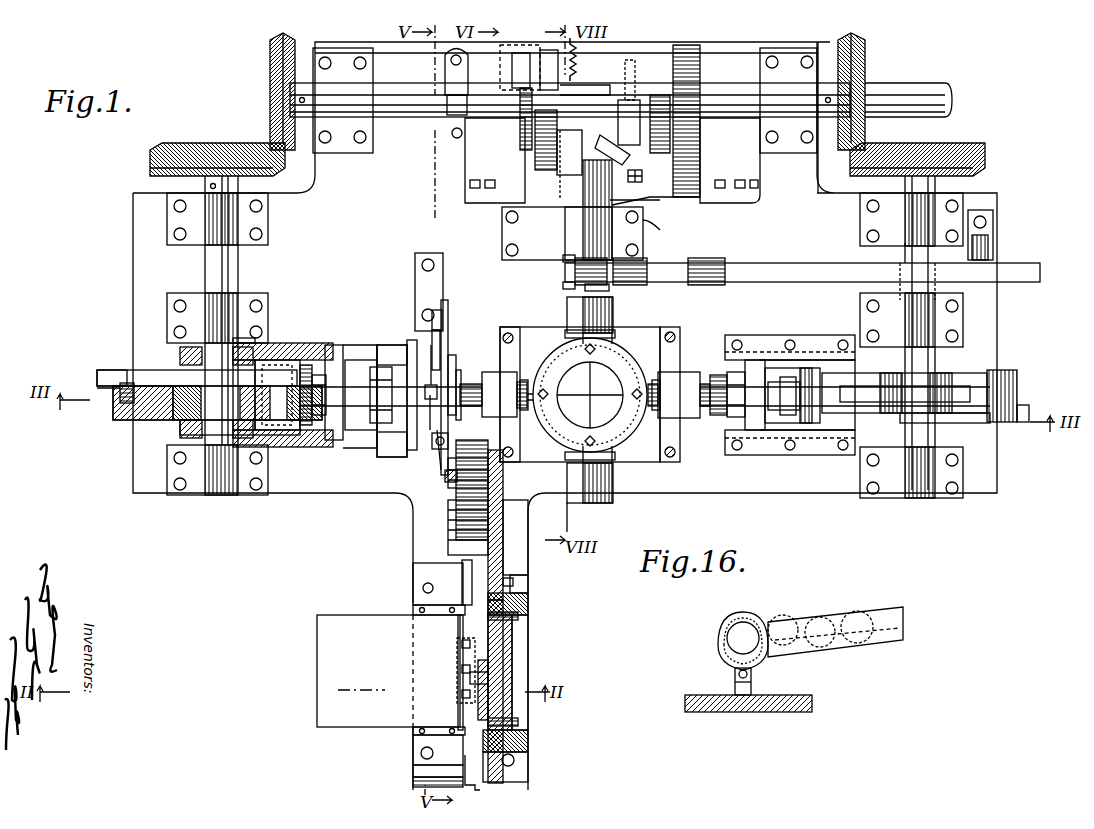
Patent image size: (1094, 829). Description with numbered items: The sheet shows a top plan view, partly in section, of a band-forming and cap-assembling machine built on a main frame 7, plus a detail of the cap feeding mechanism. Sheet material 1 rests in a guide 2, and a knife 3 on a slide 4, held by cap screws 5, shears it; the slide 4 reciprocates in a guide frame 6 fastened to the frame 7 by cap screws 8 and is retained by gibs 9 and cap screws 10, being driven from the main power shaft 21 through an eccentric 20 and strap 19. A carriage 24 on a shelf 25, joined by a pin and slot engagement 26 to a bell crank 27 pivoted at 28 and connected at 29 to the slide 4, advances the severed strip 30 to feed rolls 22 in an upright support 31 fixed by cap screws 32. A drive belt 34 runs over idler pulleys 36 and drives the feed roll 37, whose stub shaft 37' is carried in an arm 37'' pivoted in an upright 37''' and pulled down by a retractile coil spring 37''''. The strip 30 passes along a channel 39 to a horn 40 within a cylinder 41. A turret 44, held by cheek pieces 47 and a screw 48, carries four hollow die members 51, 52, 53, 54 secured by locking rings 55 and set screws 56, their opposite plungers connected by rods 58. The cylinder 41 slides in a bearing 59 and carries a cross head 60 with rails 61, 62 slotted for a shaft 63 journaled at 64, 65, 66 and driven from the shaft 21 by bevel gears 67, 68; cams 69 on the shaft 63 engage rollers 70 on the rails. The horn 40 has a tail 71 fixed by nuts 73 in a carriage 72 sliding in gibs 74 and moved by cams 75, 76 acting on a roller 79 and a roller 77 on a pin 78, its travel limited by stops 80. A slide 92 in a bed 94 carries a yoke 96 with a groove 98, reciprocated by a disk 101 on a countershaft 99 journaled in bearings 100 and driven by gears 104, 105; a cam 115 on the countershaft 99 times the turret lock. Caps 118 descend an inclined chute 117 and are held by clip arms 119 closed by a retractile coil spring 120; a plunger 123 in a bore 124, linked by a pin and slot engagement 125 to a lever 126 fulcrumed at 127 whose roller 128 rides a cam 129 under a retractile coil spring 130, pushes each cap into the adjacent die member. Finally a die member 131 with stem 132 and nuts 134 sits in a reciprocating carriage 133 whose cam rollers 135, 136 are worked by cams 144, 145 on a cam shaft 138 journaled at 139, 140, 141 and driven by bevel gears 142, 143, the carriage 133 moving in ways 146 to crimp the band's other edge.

In FIG. 1, the sheet material 1 is at (388, 671).
In FIG. 1, the guide 2 is at (418, 607).
In FIG. 1, the knife 3 is at (458, 628).
In FIG. 1, the slide 4 is at (512, 650).
In FIG. 1, the cap screws 5 is at (460, 675).
In FIG. 1, the guide frame 6 is at (528, 601).
In FIG. 1, the main frame 7 is at (520, 540).
In FIG. 16, the main frame 7 is at (765, 712).
In FIG. 1, the cap screws 8 is at (515, 760).
In FIG. 1, the gibs 9 is at (512, 618).
In FIG. 1, the cap screws 10 is at (513, 585).
In FIG. 1, the strap 19 is at (456, 94).
In FIG. 1, the eccentric 20 is at (438, 75).
In FIG. 1, the main power shaft 21 is at (942, 93).
In FIG. 1, the feed rolls 22 is at (488, 478).
In FIG. 1, the carriage 24 is at (458, 755).
In FIG. 1, the shelf 25 is at (415, 745).
In FIG. 1, the pin and slot engagement 26 is at (445, 768).
In FIG. 1, the bell crank 27 is at (478, 775).
In FIG. 1, the pivot 28 is at (520, 778).
In FIG. 1, the pin and slot connection 29 is at (470, 686).
In FIG. 1, the severed strip 30 is at (462, 583).
In FIG. 1, the upright support 31 is at (500, 510).
In FIG. 1, the cap screws 32 is at (528, 578).
In FIG. 1, the drive belt 34 is at (456, 520).
In FIG. 1, the idler pulleys 36 is at (446, 480).
In FIG. 1, the additional feed roll 37 is at (478, 383).
In FIG. 1, the stub shaft 37' is at (423, 360).
In FIG. 1, the arm 37'' is at (464, 376).
In FIG. 1, the upright 37''' is at (453, 292).
In FIG. 1, the retractile coil spring 37'''' is at (463, 334).
In FIG. 1, the channel 39 is at (440, 590).
In FIG. 1, the horn 40 is at (383, 395).
In FIG. 1, the cylinder 41 is at (438, 470).
In FIG. 1, the turret 44 is at (630, 430).
In FIG. 1, the cheek pieces 47 is at (508, 352).
In FIG. 1, the screw 48 is at (510, 330).
In FIG. 1, the die member 51 is at (493, 394).
In FIG. 1, the die member 52 is at (590, 315).
In FIG. 1, the die member 53 is at (679, 395).
In FIG. 1, the die member 54 is at (590, 483).
In FIG. 1, the locking rings 55 is at (655, 358).
In FIG. 1, the set screws 56 is at (585, 349).
In FIG. 1, the rods 58 is at (590, 395).
In FIG. 1, the bearing 59 is at (435, 450).
In FIG. 1, the cross head 60 is at (412, 345).
In FIG. 1, the rail 61 is at (392, 401).
In FIG. 1, the rail 62 is at (392, 444).
In FIG. 1, the shaft 63 is at (212, 268).
In FIG. 1, the journal 64 is at (217, 470).
In FIG. 1, the journal 65 is at (217, 318).
In FIG. 1, the journal 66 is at (217, 219).
In FIG. 1, the bevel gear 67 is at (240, 156).
In FIG. 1, the bevel gear 68 is at (268, 68).
In FIG. 1, the cams 69 is at (180, 362).
In FIG. 1, the rollers 70 is at (250, 350).
In FIG. 1, the tail 71 is at (320, 360).
In FIG. 1, the carriage 72 is at (358, 455).
In FIG. 1, the nuts 73 is at (340, 375).
In FIG. 1, the gibs 74 is at (377, 343).
In FIG. 1, the cam 75 is at (185, 368).
In FIG. 1, the cam 76 is at (160, 410).
In FIG. 1, the roller 77 is at (300, 350).
In FIG. 1, the pin 78 is at (300, 343).
In FIG. 1, the roller 79 is at (100, 375).
In FIG. 1, the stops 80 is at (343, 350).
In FIG. 1, the slide 92 is at (560, 165).
In FIG. 1, the bed 94 is at (535, 70).
In FIG. 1, the yoke 96 is at (512, 58).
In FIG. 1, the groove 98 is at (580, 88).
In FIG. 1, the countershaft 99 is at (660, 112).
In FIG. 1, the bearings 100 is at (612, 160).
In FIG. 1, the disk 101 is at (525, 140).
In FIG. 1, the gear 104 is at (701, 65).
In FIG. 1, the gear 105 is at (686, 185).
In FIG. 1, the cam 115 is at (550, 146).
In FIG. 1, the inclined chute 117 is at (1020, 274).
In FIG. 16, the inclined chute 117 is at (888, 630).
In FIG. 1, the caps 118 is at (710, 262).
In FIG. 16, the caps 118 is at (855, 610).
In FIG. 1, the clip arms 119 is at (562, 284).
In FIG. 16, the clip arms 119 is at (758, 618).
In FIG. 1, the retractile coil spring 120 is at (608, 289).
In FIG. 16, the retractile coil spring 120 is at (752, 665).
In FIG. 1, the plunger 123 is at (580, 195).
In FIG. 1, the bore 124 is at (588, 210).
In FIG. 1, the pin and slot engagement 125 is at (628, 158).
In FIG. 1, the lever 126 is at (640, 182).
In FIG. 1, the fulcrum 127 is at (660, 200).
In FIG. 1, the roller 128 is at (620, 210).
In FIG. 1, the cam 129 is at (622, 128).
In FIG. 1, the retractile coil spring 130 is at (578, 56).
In FIG. 1, the die member 131 is at (718, 378).
In FIG. 1, the stem 132 is at (775, 400).
In FIG. 1, the reciprocating carriage 133 is at (815, 335).
In FIG. 1, the nuts 134 is at (765, 385).
In FIG. 1, the cam roller 135 is at (835, 385).
In FIG. 1, the cam roller 136 is at (1010, 423).
In FIG. 1, the cam shaft 138 is at (905, 243).
In FIG. 1, the journal 139 is at (911, 219).
In FIG. 1, the journal 140 is at (911, 320).
In FIG. 1, the journal 141 is at (911, 472).
In FIG. 1, the bevel gear 142 is at (975, 158).
In FIG. 1, the bevel gear 143 is at (866, 62).
In FIG. 1, the cam 144 is at (930, 393).
In FIG. 1, the cam 145 is at (950, 420).
In FIG. 1, the ways 146 is at (805, 335).